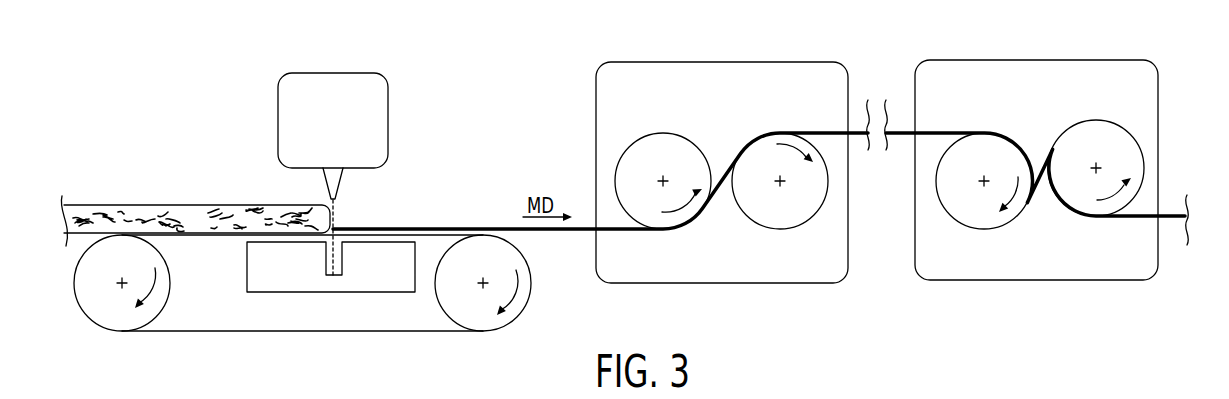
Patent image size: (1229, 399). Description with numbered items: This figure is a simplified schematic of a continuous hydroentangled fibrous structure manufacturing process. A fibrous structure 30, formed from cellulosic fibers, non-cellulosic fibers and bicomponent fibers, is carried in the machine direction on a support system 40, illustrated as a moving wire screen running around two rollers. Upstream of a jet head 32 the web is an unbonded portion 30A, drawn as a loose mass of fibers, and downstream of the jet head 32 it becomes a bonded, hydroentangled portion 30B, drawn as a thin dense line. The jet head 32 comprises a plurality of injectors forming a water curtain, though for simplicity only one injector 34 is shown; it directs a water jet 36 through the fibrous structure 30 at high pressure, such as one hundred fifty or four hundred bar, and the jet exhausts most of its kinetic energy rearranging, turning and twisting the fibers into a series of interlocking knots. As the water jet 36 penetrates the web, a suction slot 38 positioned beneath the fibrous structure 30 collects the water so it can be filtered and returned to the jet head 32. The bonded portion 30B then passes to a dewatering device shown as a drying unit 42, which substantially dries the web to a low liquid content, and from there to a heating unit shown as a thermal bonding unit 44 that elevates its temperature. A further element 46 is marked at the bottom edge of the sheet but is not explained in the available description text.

The nonwoven web 30 is at (88, 161).
The fibrous web before bonding 30A is at (192, 202).
The bonded web 30B is at (449, 228).
The hydroentangling / fluid supply unit 32 is at (389, 121).
The nozzle 34 is at (338, 191).
The fluid jet / bonding zone 36 is at (342, 218).
The vacuum box 38 is at (318, 280).
The conveyor belt 40 is at (128, 349).
The drying unit 42 is at (725, 61).
The thermal bonding unit 44 is at (1040, 59).
The winder / downstream unit 46 is at (864, 394).